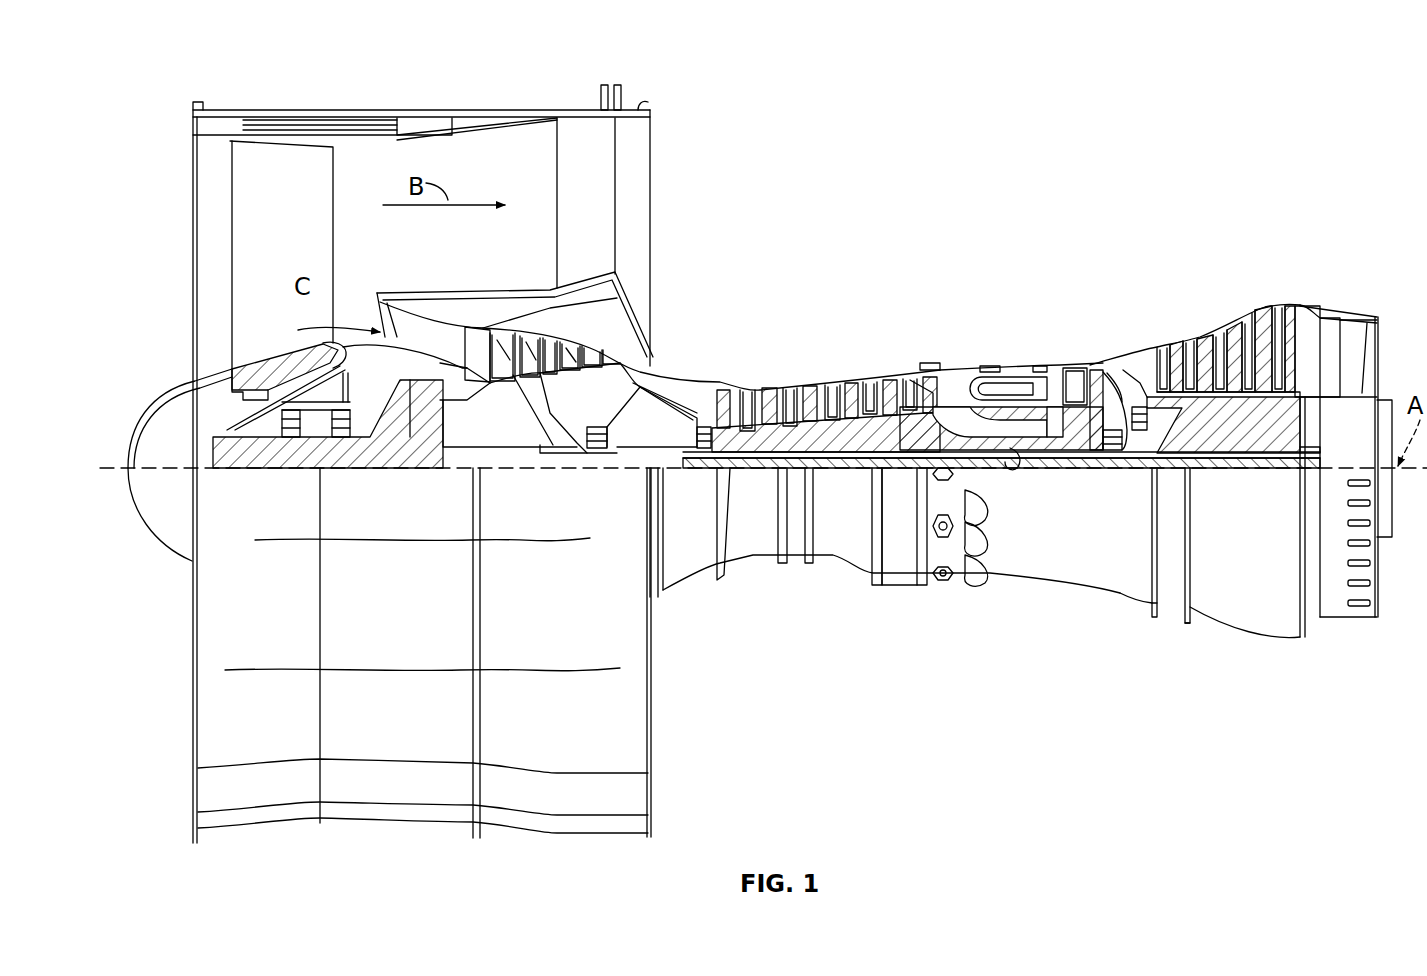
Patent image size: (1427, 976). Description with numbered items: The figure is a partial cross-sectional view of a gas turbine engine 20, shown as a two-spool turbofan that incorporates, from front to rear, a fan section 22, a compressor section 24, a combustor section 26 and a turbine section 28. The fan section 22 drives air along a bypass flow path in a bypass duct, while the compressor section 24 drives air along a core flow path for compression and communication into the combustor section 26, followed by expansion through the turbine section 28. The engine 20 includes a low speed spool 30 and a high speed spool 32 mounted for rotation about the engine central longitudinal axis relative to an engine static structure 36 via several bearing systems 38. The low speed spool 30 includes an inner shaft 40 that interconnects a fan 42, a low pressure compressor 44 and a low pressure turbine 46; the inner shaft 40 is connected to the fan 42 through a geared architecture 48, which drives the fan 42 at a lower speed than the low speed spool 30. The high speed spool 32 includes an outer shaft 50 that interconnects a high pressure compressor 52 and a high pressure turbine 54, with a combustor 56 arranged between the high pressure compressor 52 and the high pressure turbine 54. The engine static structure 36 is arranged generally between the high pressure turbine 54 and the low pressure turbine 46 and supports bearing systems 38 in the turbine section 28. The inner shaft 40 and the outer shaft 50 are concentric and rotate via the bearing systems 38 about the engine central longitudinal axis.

The gas turbine engine 20 is at (1203, 147).
The fan section 22 is at (293, 108).
The compressor section 24 is at (834, 330).
The combustor section 26 is at (993, 328).
The turbine section 28 is at (1136, 307).
The low speed spool 30 is at (863, 472).
The high speed spool 32 is at (908, 432).
The engine static structure 36 is at (905, 585).
The bearing systems 38 is at (300, 425).
The inner shaft 40 is at (663, 460).
The fan 42 is at (304, 231).
The low pressure compressor 44 is at (568, 350).
The low pressure turbine 46 is at (1236, 330).
The geared architecture 48 is at (427, 435).
The outer shaft 50 is at (1015, 440).
The high pressure compressor 52 is at (823, 437).
The high pressure turbine 54 is at (1080, 373).
The combustor 56 is at (1002, 388).